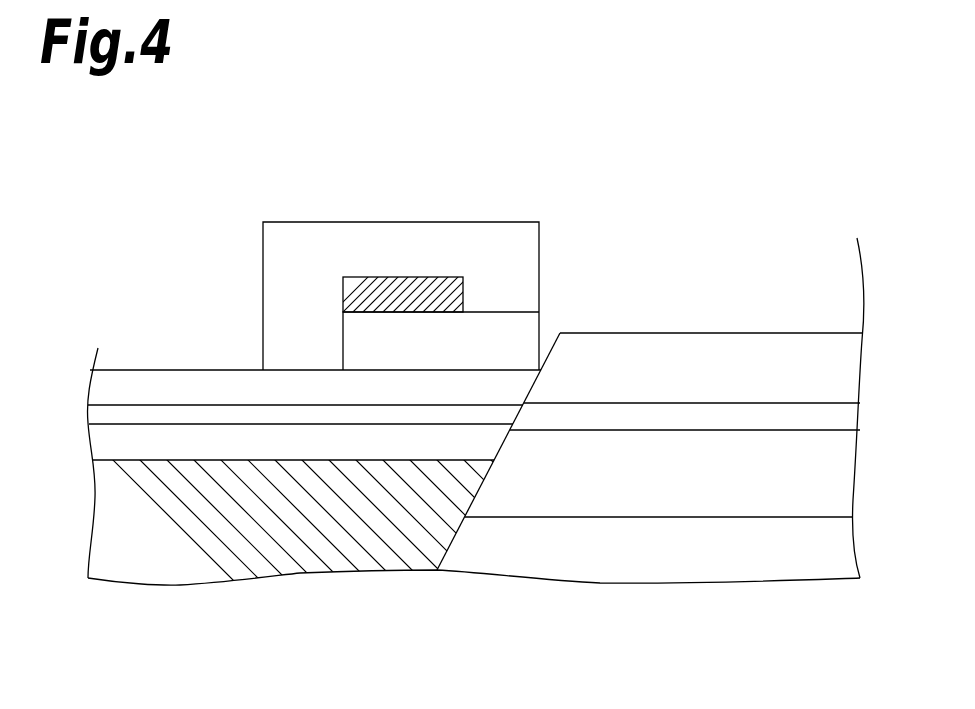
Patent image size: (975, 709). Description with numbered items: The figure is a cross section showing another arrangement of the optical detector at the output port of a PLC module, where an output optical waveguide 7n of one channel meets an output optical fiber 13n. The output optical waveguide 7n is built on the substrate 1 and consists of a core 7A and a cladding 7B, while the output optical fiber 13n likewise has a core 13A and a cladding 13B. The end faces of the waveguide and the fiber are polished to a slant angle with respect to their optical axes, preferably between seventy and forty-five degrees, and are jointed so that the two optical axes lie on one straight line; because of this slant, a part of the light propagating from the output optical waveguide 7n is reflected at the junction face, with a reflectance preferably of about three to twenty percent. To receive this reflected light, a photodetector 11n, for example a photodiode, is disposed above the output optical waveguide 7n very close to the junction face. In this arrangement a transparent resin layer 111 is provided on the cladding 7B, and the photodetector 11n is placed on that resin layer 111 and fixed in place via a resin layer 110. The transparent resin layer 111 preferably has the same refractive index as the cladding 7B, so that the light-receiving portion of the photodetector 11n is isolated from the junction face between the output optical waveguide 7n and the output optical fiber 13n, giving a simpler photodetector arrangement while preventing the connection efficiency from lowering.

The substrate 1 is at (228, 568).
The output optical waveguide 7n is at (314, 295).
The core 7A is at (137, 417).
The cladding 7B is at (223, 383).
The resin layer 110 is at (308, 237).
The transparent resin layer 111 is at (518, 334).
The photodetector 11n is at (402, 277).
The output optical fiber 13n is at (662, 316).
The core 13A is at (678, 415).
The cladding 13B is at (787, 348).